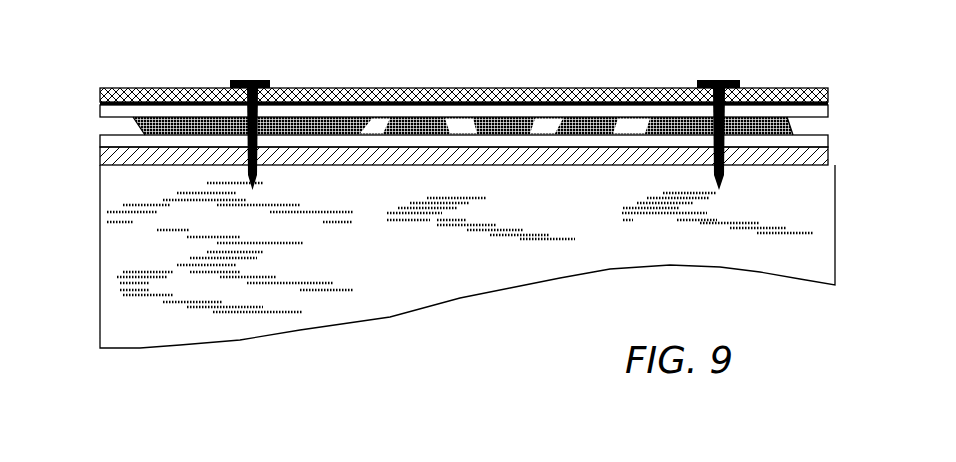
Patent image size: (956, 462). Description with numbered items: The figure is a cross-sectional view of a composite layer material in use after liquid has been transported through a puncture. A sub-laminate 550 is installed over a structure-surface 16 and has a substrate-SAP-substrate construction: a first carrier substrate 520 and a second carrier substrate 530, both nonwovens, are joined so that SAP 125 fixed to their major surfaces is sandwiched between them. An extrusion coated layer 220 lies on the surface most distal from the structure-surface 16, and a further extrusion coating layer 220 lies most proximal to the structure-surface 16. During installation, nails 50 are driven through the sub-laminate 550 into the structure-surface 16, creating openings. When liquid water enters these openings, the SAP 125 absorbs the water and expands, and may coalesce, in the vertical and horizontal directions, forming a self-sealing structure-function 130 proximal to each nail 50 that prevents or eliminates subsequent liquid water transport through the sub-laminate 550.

The structure-surface 16 is at (177, 317).
The nail 50 is at (247, 87).
The SAP 125 is at (585, 116).
The self-sealing structure-function 130 is at (510, 62).
The extrusion coated layer 220 is at (828, 92).
The first carrier substrate 520 is at (828, 108).
The second carrier substrate 530 is at (828, 137).
The sub-laminate 550 is at (474, 77).